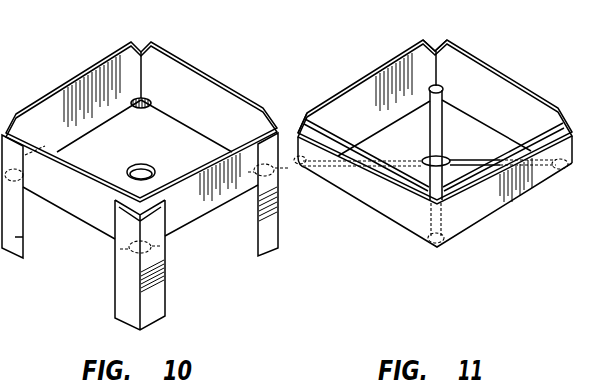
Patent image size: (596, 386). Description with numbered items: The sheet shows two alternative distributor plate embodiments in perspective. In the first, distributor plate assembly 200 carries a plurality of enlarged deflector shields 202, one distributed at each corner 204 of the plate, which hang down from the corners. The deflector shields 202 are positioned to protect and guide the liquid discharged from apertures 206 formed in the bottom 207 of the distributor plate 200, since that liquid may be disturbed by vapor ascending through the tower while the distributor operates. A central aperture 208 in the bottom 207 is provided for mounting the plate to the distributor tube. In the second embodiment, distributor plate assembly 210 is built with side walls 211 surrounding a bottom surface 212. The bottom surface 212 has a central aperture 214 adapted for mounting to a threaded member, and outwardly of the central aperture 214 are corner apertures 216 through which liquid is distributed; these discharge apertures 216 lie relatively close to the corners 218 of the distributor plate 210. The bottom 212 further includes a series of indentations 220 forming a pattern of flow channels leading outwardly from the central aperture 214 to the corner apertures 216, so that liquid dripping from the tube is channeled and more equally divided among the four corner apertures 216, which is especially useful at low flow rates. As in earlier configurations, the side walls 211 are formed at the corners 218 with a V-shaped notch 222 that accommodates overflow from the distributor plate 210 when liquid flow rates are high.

In FIG. 10, the distributor plate assembly 200 is at (204, 64).
In FIG. 10, the enlarged deflector shields 202 is at (23, 238).
In FIG. 10, the corner 204 is at (152, 246).
In FIG. 10, the apertures 206 is at (148, 100).
In FIG. 10, the bottom 207 is at (174, 141).
In FIG. 10, the central aperture 208 is at (139, 164).
In FIG. 11, the distributor plate assembly 210 is at (506, 65).
In FIG. 11, the side walls 211 is at (478, 206).
In FIG. 11, the bottom surface 212 is at (458, 117).
In FIG. 11, the central aperture 214 is at (451, 160).
In FIG. 11, the corner apertures 216 is at (448, 46).
In FIG. 11, the corners 218 is at (553, 130).
In FIG. 11, the indentations 220 is at (424, 148).
In FIG. 11, the V-shaped notch 222 is at (308, 112).